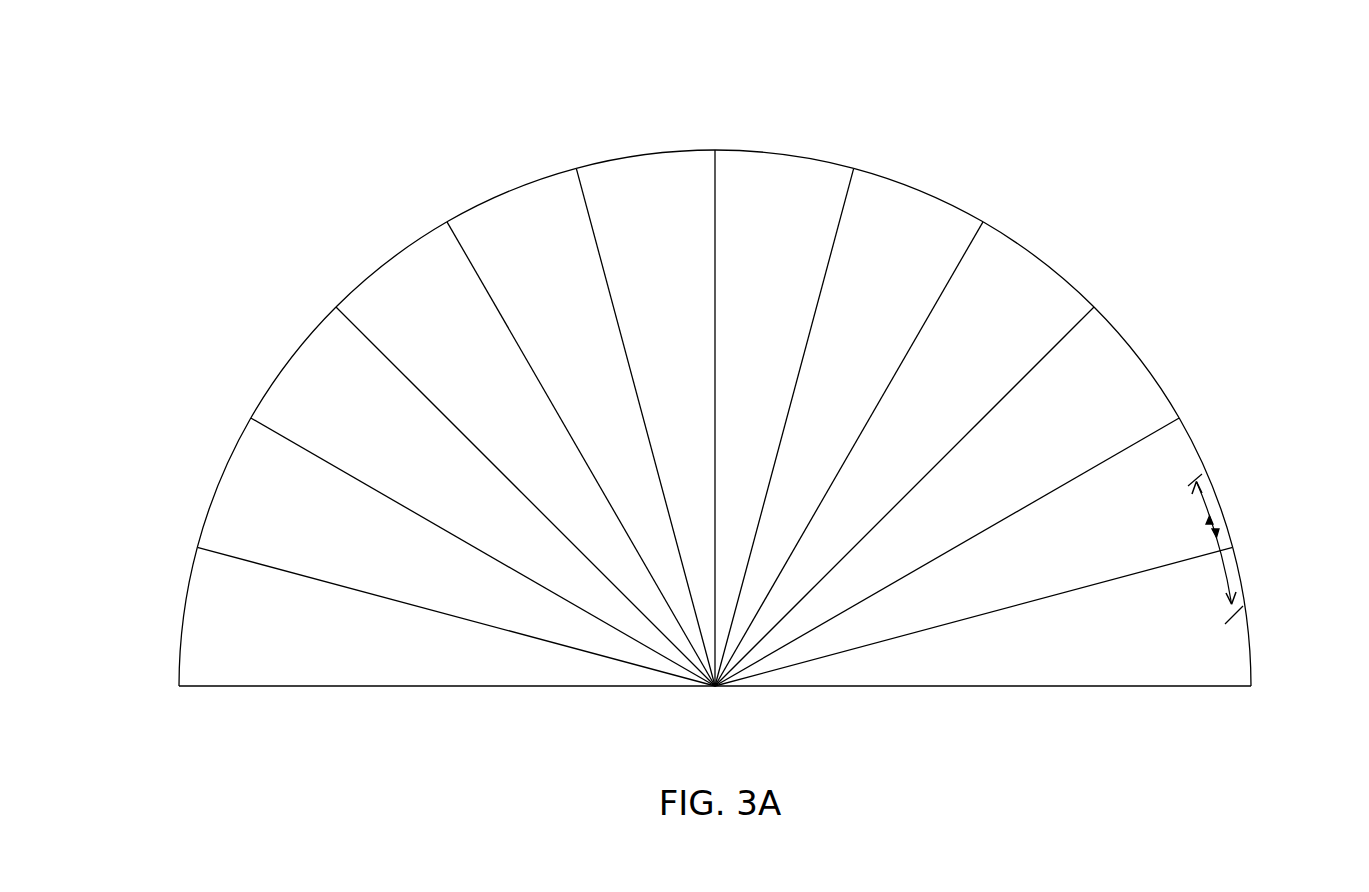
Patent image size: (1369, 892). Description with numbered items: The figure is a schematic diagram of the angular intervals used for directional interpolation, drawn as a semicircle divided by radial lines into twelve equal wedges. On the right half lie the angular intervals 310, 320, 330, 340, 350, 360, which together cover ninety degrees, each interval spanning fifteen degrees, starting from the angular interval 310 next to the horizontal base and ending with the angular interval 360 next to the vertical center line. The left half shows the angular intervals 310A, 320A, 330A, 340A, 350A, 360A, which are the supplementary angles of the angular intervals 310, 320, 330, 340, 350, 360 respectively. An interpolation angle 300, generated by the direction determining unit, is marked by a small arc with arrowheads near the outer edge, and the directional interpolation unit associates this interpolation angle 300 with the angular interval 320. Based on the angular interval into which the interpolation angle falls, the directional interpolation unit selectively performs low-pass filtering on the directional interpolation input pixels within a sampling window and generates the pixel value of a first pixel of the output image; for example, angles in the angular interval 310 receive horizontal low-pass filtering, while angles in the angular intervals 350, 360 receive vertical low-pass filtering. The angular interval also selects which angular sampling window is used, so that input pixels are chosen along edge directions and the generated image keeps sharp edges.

The interpolation angle 300 is at (1222, 520).
The angular interval 310 is at (1225, 620).
The angular interval 320 is at (1197, 483).
The angular interval 330 is at (1116, 373).
The angular interval 340 is at (1025, 272).
The angular interval 350 is at (912, 212).
The angular interval 360 is at (781, 173).
The angular interval 310A is at (204, 622).
The angular interval 320A is at (240, 489).
The angular interval 330A is at (310, 371).
The angular interval 340A is at (395, 272).
The angular interval 350A is at (518, 212).
The angular interval 360A is at (648, 174).